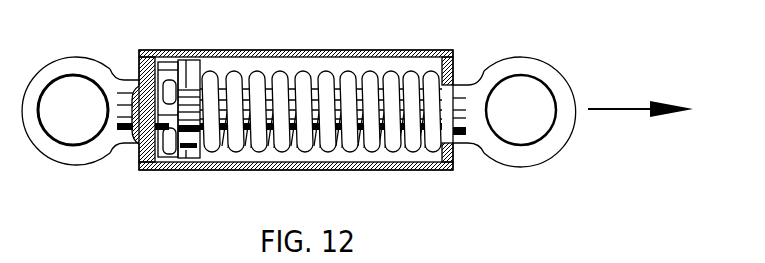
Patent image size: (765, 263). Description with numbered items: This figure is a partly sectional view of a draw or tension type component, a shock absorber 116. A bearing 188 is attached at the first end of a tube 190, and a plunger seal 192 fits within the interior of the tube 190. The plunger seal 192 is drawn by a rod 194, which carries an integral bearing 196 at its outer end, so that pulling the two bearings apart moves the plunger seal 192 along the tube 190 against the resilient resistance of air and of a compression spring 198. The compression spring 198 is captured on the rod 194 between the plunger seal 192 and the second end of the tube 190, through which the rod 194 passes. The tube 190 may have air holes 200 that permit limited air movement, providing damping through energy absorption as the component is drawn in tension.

The tension type component or shock absorber 116 is at (356, 46).
The bearing 188 is at (77, 60).
The tube 190 is at (270, 50).
The plunger seal 192 is at (188, 157).
The rod 194 is at (257, 137).
The bearing 196 is at (553, 66).
The compression spring 198 is at (382, 143).
The air holes 200 is at (174, 50).